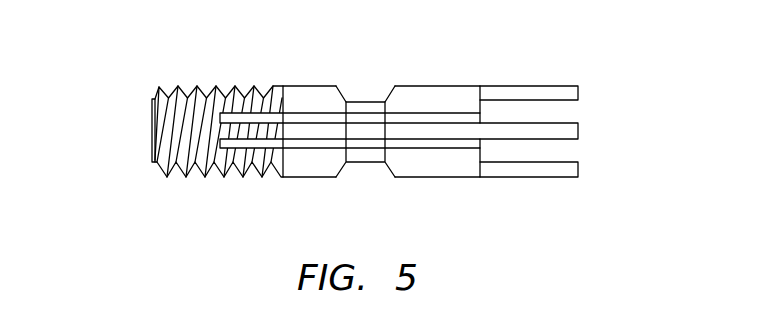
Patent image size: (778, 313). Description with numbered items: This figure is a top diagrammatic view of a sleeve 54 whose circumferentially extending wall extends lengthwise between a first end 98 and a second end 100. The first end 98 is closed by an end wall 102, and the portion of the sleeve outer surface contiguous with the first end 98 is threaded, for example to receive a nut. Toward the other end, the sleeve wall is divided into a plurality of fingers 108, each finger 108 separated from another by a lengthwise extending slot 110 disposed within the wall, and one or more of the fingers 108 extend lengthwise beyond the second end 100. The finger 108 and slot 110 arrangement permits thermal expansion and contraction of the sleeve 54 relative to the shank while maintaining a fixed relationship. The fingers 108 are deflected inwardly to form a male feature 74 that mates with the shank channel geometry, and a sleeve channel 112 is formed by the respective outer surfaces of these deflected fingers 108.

The sleeve 54 is at (356, 126).
The male feature 74 is at (362, 163).
The first end 98 is at (138, 117).
The second end 100 is at (481, 149).
The end wall 102 is at (152, 140).
The fingers 108 is at (582, 95).
The slot 110 is at (452, 123).
The sleeve channel 112 is at (366, 93).